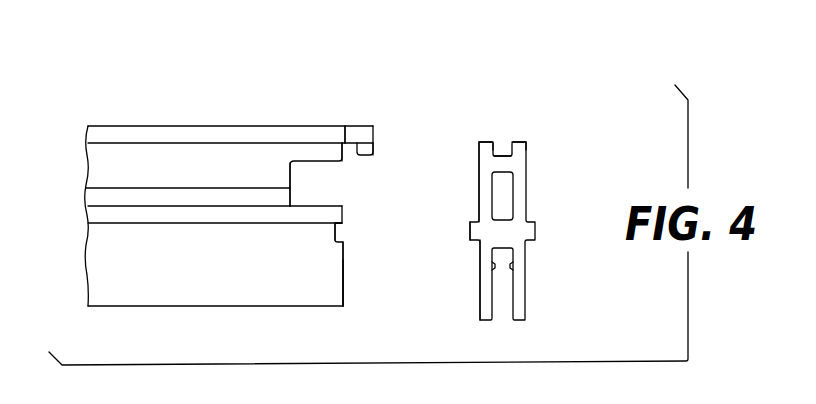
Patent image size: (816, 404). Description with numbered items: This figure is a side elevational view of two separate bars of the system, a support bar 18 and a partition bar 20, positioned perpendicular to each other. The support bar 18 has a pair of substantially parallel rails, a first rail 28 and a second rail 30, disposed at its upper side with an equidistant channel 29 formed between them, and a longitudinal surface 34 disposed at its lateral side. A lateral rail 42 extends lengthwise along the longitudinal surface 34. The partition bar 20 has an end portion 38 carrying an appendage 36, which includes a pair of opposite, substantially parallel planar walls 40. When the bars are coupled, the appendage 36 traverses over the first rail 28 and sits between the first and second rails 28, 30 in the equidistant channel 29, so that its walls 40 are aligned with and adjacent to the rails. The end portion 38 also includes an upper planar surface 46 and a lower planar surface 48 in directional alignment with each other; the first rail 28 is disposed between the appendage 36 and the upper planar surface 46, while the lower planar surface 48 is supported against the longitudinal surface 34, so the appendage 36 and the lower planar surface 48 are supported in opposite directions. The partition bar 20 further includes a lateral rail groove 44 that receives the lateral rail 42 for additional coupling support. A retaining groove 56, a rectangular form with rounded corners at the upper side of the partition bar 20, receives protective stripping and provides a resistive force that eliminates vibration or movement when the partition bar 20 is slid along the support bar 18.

The support bar 18 is at (538, 186).
The partition bar 20 is at (166, 116).
The first rail 28 is at (486, 142).
The equidistant channel 29 is at (502, 156).
The second rail 30 is at (520, 142).
The longitudinal surface 34 is at (479, 150).
The appendage 36 is at (372, 126).
The end portion 38 is at (343, 265).
The planar sides or walls 40 is at (345, 126).
The lateral rail 42 is at (470, 228).
The lateral rail groove 44 is at (341, 232).
The upper planar surface 46 is at (342, 148).
The lower planar surface 48 is at (343, 277).
The retaining groove 56 is at (290, 177).